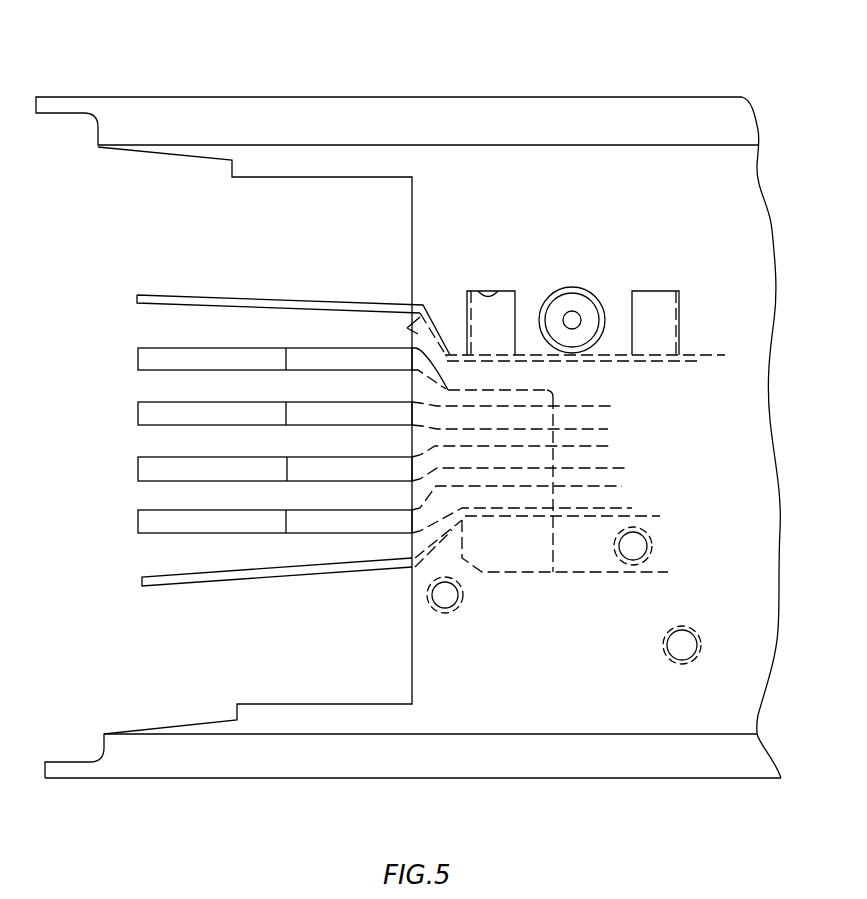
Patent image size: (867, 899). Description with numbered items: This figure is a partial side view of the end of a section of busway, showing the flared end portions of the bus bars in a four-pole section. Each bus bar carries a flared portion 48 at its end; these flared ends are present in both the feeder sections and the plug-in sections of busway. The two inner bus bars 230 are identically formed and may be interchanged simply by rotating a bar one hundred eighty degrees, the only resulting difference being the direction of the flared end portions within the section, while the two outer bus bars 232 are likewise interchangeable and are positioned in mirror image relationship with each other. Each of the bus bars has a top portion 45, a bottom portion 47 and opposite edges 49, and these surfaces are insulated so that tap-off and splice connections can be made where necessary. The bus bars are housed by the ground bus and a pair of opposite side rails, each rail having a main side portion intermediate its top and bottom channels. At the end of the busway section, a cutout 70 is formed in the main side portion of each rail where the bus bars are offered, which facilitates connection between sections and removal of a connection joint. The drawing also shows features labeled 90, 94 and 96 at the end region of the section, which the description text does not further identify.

The top portion 45 is at (148, 401).
The bottom portion 47 is at (153, 425).
The flared portion 48 is at (208, 292).
The opposite edges 49 is at (216, 423).
The cutout 70 is at (412, 250).
The standoff post 90 is at (492, 297).
The mounting boss 94 is at (568, 289).
The fastener hole 96 is at (572, 320).
The inner bus bars 230 is at (336, 415).
The outer bus bars 232 is at (138, 360).